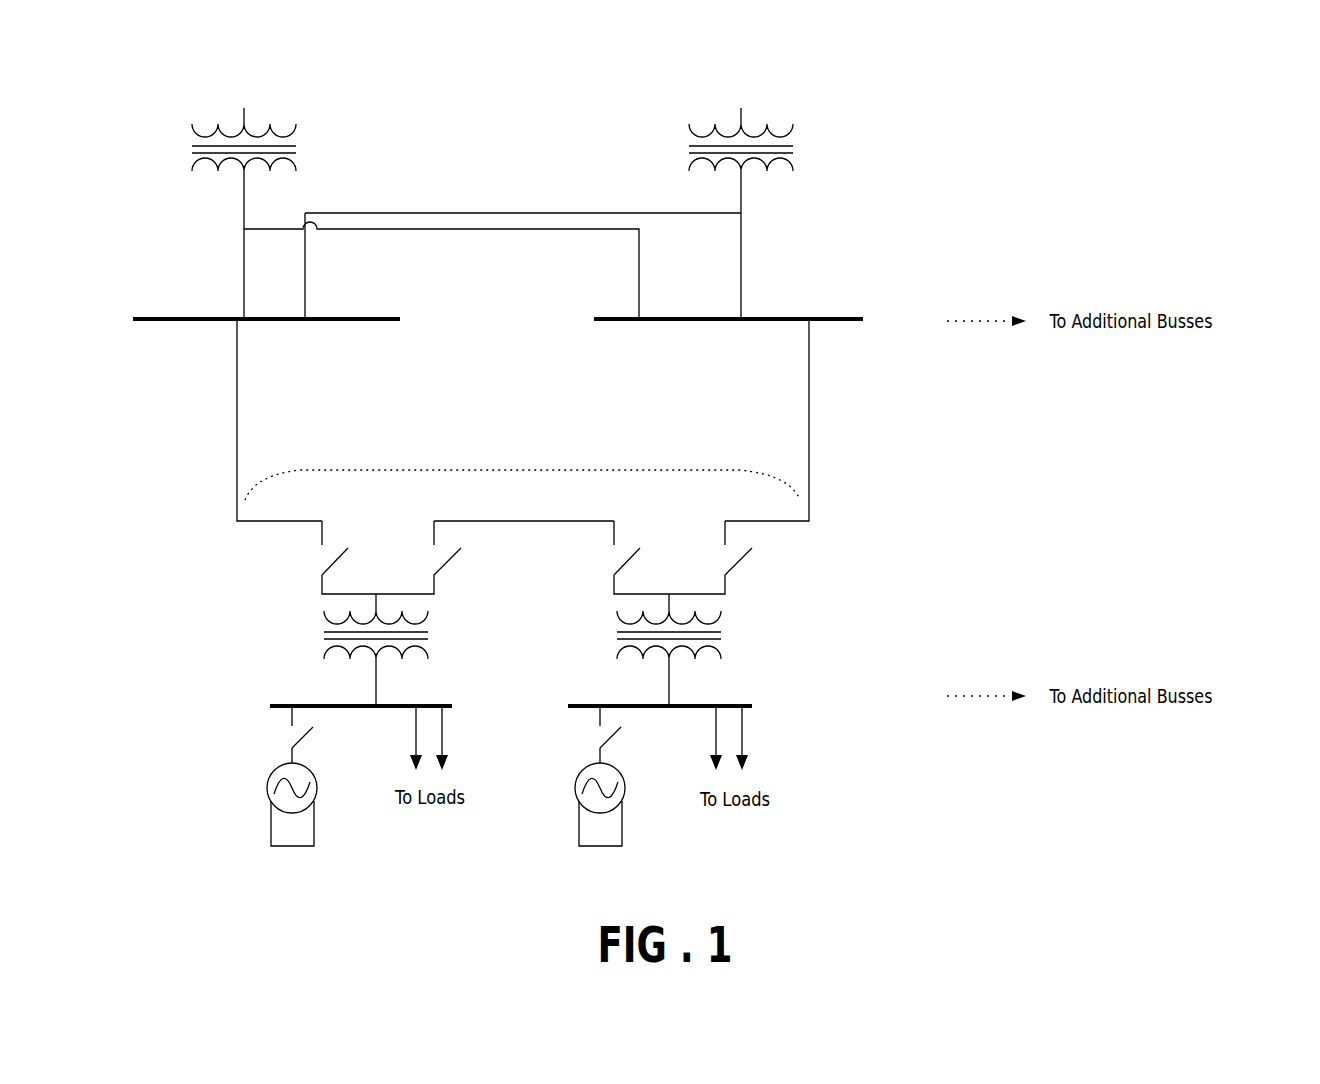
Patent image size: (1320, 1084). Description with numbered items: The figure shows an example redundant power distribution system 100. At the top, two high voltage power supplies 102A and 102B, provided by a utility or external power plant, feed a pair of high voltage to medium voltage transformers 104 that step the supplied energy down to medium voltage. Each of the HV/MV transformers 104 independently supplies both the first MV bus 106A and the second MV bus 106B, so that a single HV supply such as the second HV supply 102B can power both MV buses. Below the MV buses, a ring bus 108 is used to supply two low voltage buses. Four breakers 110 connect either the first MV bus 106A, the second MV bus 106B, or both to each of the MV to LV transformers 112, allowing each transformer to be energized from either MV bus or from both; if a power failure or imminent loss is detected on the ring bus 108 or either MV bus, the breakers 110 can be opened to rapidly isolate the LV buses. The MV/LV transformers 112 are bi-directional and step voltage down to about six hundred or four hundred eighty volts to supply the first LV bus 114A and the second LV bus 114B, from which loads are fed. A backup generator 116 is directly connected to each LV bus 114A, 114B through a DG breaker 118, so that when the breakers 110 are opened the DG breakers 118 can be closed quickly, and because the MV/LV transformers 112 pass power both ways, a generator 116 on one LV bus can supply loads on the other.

The redundant power distribution system 100 is at (1243, 182).
The HV power supply 1 102A is at (740, 83).
The HV power supply 2 102B is at (246, 83).
The high voltage to medium voltage transformers 104 is at (296, 137).
The MV bus 1 106A is at (760, 319).
The MV bus 2 106B is at (342, 319).
The ring bus 108 is at (521, 468).
The breakers 110 is at (537, 551).
The MV to LV transformers 112 is at (322, 638).
The LV bus 1 114A is at (728, 705).
The LV bus 2 114B is at (412, 706).
The generator 116 is at (447, 835).
The DG breakers 118 is at (385, 742).